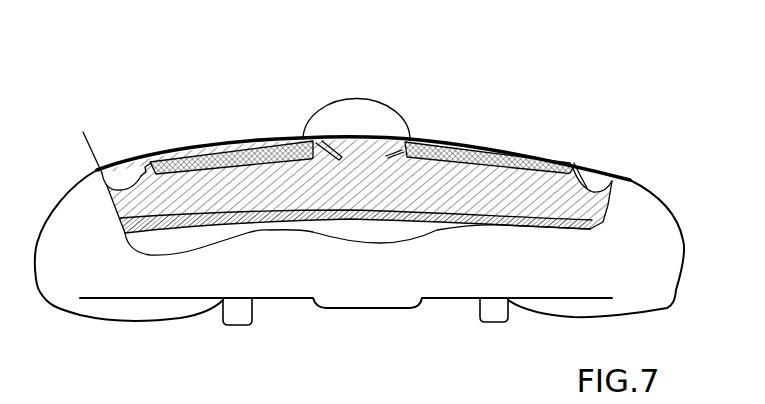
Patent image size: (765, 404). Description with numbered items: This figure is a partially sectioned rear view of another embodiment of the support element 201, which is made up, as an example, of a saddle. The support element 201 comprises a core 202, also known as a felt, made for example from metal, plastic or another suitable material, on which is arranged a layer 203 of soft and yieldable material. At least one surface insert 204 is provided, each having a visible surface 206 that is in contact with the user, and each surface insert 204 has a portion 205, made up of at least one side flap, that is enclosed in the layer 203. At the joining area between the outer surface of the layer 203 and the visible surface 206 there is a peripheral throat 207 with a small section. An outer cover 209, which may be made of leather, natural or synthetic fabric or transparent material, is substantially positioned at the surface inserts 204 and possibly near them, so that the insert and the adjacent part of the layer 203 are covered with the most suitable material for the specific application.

The support element 201 is at (178, 108).
The core 202 is at (393, 215).
The layer 203 is at (293, 198).
The surface insert 204 is at (253, 140).
The portion 205 is at (102, 172).
The visible surface 206 is at (227, 127).
The peripheral throat 207 is at (147, 163).
The outer cover 209 is at (362, 140).